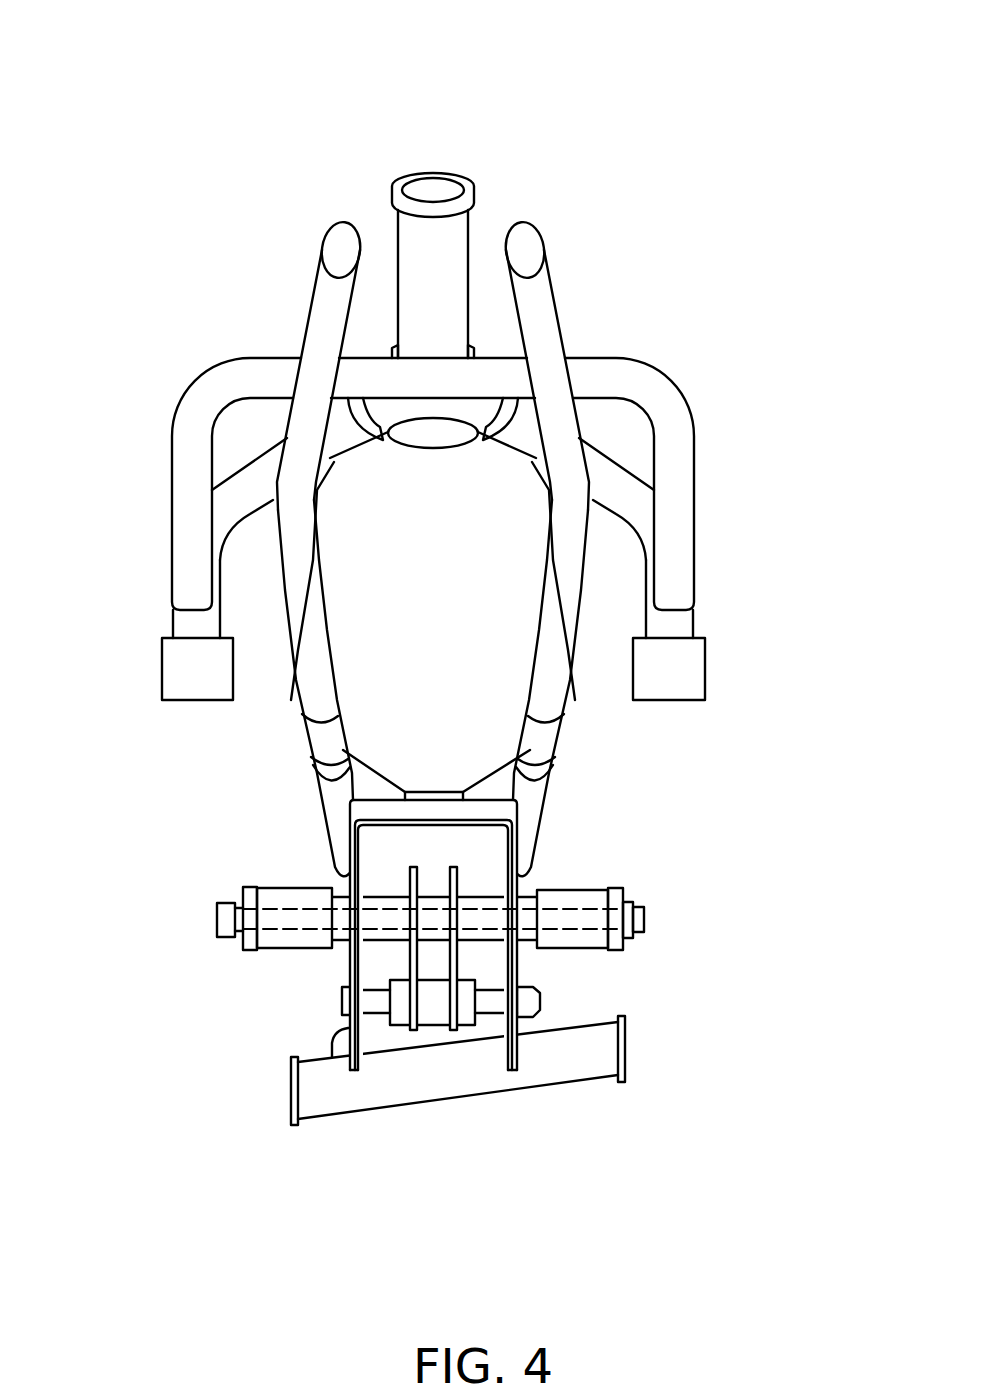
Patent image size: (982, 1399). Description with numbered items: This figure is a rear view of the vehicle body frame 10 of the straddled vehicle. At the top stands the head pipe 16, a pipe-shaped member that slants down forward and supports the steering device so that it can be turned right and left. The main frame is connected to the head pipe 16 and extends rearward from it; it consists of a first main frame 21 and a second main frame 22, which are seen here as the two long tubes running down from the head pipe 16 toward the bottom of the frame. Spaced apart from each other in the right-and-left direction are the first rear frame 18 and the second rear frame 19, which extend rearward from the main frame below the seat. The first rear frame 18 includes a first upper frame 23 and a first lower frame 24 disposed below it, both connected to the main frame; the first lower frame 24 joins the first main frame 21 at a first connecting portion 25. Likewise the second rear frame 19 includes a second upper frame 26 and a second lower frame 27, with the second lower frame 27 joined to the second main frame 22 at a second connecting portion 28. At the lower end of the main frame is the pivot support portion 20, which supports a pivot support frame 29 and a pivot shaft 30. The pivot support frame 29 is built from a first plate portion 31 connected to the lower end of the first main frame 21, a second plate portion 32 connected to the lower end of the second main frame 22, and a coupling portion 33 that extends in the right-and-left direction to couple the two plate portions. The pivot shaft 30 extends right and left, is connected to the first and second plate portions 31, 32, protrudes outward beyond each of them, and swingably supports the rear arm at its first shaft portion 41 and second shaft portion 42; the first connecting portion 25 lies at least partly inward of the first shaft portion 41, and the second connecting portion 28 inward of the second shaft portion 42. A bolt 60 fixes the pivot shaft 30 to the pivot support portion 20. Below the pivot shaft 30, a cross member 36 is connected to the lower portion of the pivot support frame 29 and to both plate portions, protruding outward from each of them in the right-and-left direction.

The vehicle body frame 10 is at (571, 123).
The head pipe 16 is at (420, 182).
The first rear frame 18 is at (186, 491).
The second rear frame 19 is at (687, 492).
The pivot support portion 20 is at (480, 992).
The first main frame 21 is at (327, 805).
The second main frame 22 is at (540, 805).
The first upper frame 23 is at (338, 243).
The first lower frame 24 is at (297, 568).
The first connecting portion 25 is at (320, 745).
The second upper frame 26 is at (530, 243).
The second lower frame 27 is at (572, 573).
The second connecting portion 28 is at (550, 738).
The pivot support frame 29 is at (436, 737).
The pivot shaft 30 is at (488, 935).
The first plate portion 31 is at (350, 960).
The second plate portion 32 is at (522, 962).
The coupling portion 33 is at (460, 770).
The cross member 36 is at (413, 1090).
The first shaft portion 41 is at (280, 888).
The second shaft portion 42 is at (573, 890).
The bolt 60 is at (646, 918).